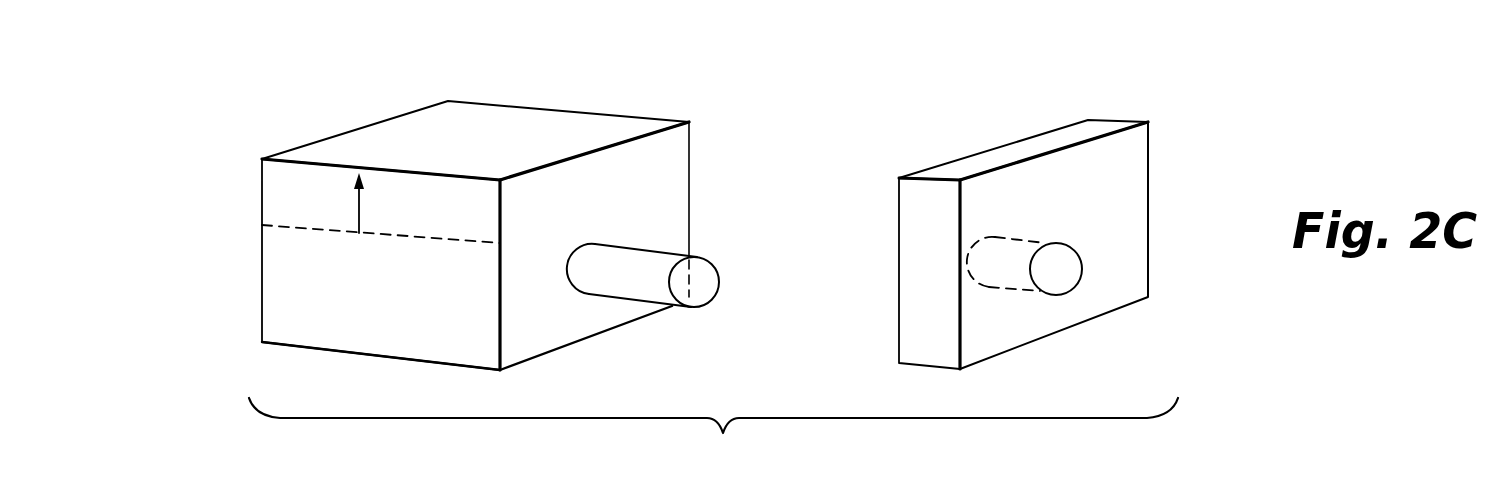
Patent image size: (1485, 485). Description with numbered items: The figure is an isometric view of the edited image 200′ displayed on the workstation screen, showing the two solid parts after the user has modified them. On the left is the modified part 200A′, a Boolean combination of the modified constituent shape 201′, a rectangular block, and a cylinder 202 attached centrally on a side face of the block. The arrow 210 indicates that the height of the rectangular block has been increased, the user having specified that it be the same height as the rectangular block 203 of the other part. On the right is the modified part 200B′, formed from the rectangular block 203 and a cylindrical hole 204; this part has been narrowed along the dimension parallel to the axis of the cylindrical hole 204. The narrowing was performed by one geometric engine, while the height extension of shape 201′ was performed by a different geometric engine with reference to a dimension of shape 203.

The image 200′ is at (713, 433).
The modified part 200A′ is at (489, 235).
The modified part 200B′ is at (1079, 213).
The modified constituent shape 201′ is at (295, 202).
The cylinder 202 is at (645, 283).
The rectangular block 203 is at (1125, 163).
The cylindrical hole 204 is at (1062, 270).
The arrow 210 is at (361, 216).